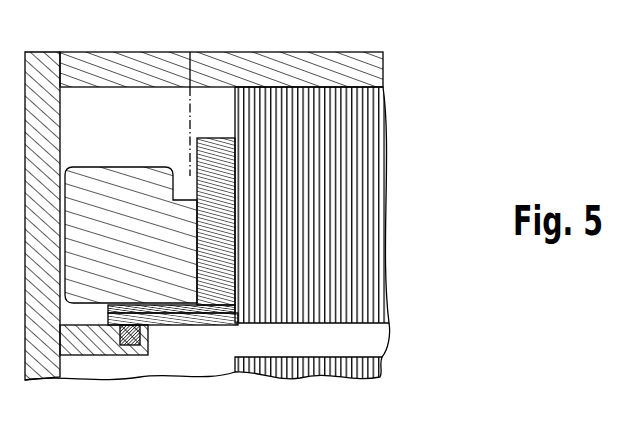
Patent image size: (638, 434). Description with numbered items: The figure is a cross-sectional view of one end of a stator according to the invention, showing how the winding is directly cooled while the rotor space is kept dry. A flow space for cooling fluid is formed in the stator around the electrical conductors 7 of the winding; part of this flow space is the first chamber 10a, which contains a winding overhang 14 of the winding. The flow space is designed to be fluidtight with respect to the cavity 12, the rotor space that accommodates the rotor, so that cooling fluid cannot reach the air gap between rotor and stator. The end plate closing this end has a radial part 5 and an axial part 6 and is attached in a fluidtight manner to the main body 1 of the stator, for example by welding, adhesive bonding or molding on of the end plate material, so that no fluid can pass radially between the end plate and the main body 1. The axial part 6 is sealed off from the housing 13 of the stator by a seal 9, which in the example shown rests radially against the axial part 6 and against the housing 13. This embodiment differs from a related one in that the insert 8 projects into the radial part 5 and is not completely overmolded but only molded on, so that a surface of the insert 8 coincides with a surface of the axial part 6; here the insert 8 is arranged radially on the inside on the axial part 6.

The main body 1 is at (346, 191).
The radial part 5 is at (217, 137).
The axial part 6 is at (158, 327).
The electrical conductors 7 is at (131, 235).
The winding overhang 14 is at (160, 245).
The insert 8 is at (192, 312).
The seal 9 is at (124, 345).
The first chamber 10a is at (137, 134).
The cavity 12 is at (319, 353).
The housing 13 is at (385, 77).